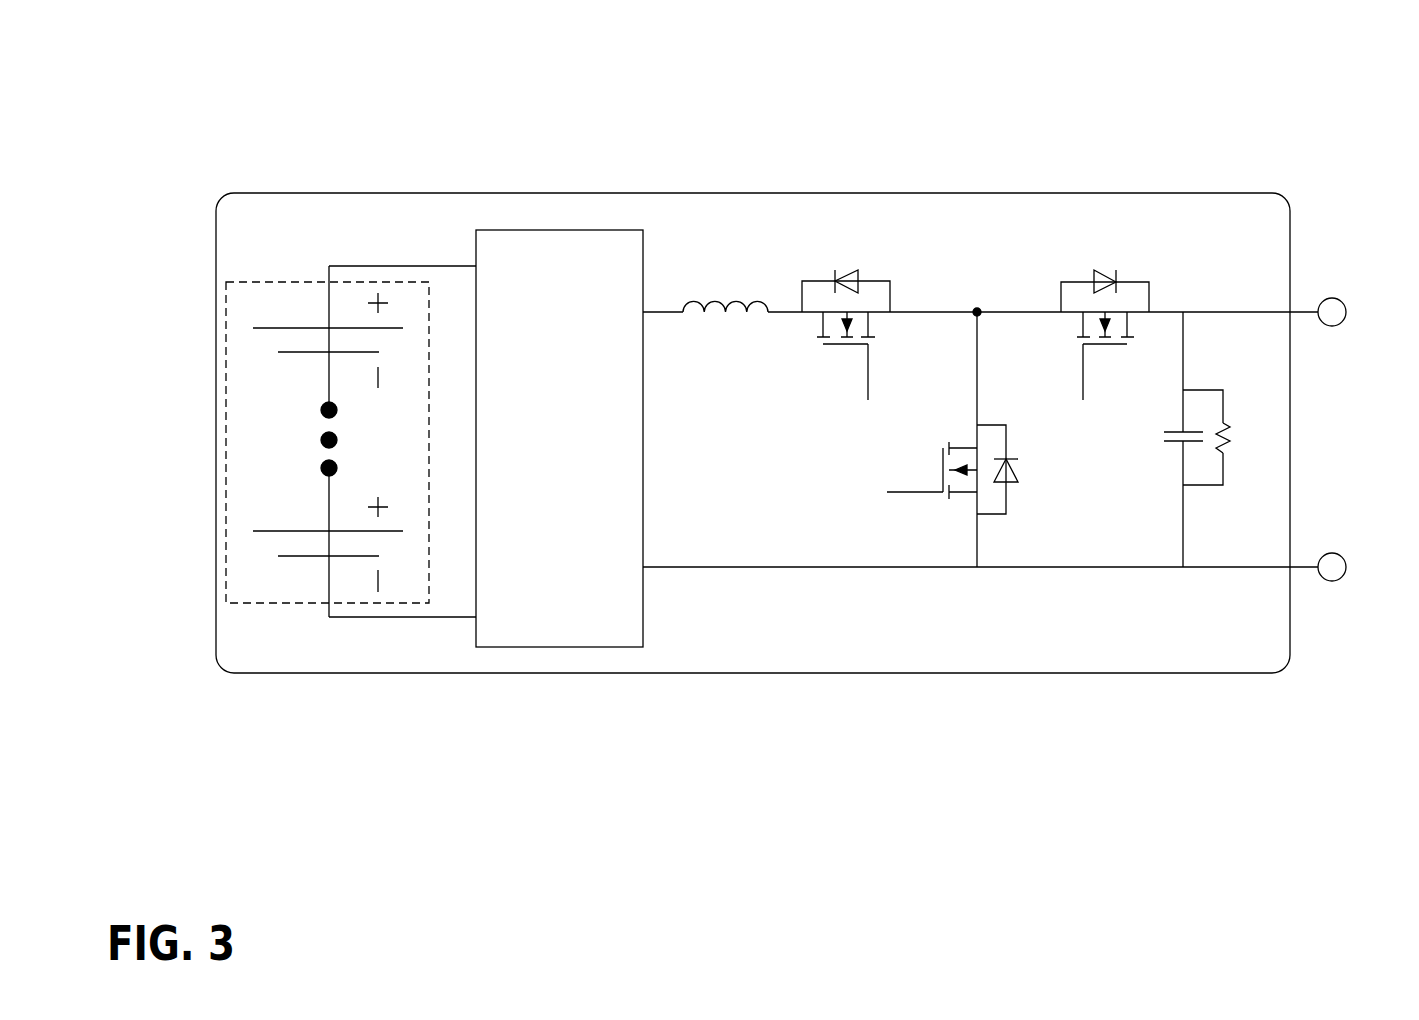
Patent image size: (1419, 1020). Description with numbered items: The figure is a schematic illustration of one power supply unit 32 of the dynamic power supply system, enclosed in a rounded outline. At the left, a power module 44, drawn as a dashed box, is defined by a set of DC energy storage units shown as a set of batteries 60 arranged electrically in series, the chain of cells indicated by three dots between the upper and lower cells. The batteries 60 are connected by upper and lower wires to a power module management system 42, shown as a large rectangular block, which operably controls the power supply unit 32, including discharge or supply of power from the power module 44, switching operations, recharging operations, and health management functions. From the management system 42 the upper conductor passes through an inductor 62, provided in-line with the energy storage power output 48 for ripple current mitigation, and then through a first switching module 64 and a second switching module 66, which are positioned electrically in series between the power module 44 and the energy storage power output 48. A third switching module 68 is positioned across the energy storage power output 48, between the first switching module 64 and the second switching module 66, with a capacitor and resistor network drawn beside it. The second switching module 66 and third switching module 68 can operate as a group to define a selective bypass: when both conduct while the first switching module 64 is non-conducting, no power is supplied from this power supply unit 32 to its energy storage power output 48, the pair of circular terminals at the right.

The power supply unit 32 is at (877, 67).
The power module management system 42 is at (552, 229).
The power module 44 is at (345, 336).
The energy storage power output 48 is at (1331, 345).
The set of batteries 60 is at (302, 368).
The inductor 62 is at (727, 287).
The first switching module 64 is at (906, 292).
The second switching module 66 is at (1158, 268).
The third switching module 68 is at (1023, 494).